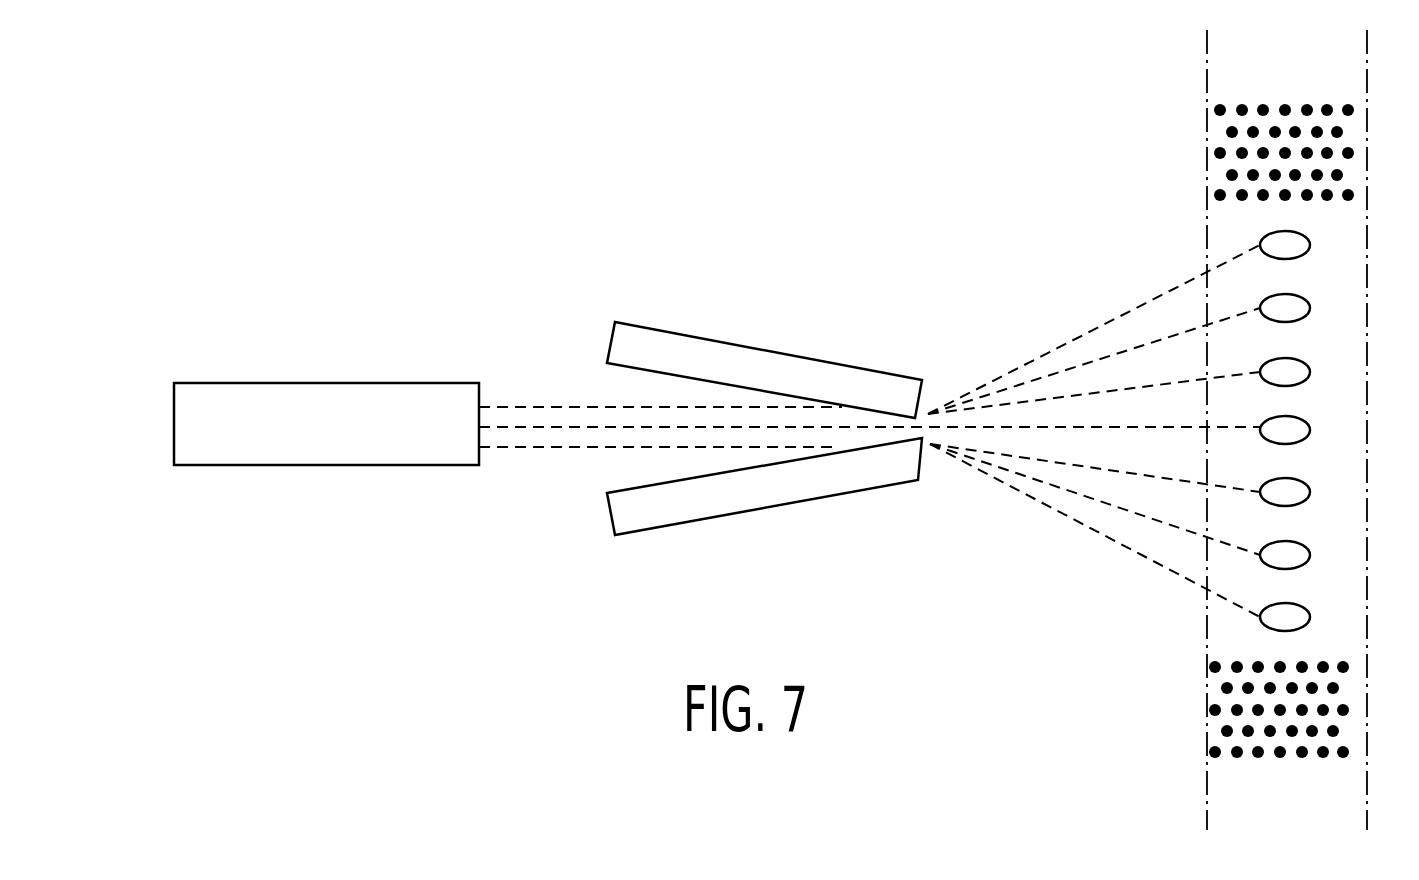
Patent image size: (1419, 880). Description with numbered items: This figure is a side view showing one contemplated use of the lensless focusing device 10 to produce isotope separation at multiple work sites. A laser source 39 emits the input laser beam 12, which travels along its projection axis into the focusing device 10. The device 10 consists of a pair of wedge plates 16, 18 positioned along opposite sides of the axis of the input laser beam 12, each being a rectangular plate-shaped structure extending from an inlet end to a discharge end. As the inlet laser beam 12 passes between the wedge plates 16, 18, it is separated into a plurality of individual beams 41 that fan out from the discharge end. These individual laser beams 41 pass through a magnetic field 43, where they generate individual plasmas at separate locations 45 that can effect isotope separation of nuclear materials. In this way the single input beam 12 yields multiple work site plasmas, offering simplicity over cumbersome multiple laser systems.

The lensless focusing device 10 is at (692, 266).
The input laser beam 12 is at (517, 400).
The wedge plate 16 is at (771, 507).
The wedge plate 18 is at (758, 347).
The laser source 39 is at (352, 383).
The individual beams 41 is at (1120, 312).
The magnetic field 43 is at (1205, 190).
The beam spots 45 is at (1306, 610).